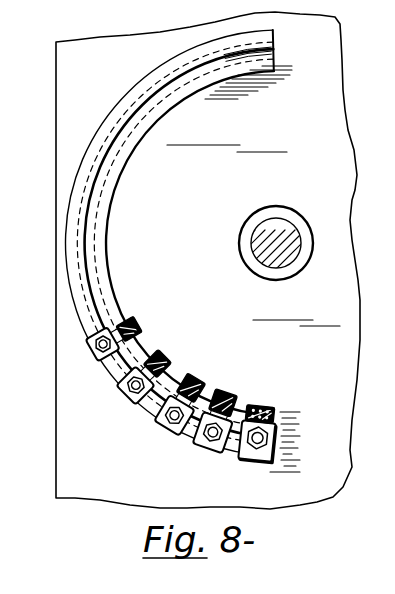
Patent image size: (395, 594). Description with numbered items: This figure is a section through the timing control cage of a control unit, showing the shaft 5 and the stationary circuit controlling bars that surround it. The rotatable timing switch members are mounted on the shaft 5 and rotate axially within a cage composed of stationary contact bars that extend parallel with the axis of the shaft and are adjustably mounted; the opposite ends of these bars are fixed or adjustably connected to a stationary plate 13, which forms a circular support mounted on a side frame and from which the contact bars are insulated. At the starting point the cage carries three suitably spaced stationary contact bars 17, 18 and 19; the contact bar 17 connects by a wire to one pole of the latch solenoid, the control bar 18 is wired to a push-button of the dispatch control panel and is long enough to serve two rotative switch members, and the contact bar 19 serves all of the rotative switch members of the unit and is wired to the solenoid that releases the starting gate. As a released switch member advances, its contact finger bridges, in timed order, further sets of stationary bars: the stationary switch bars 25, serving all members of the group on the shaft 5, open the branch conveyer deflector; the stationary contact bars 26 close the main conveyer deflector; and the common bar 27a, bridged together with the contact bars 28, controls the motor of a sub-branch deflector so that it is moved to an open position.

The stationary plate 13 is at (278, 76).
The shaft 5 is at (278, 230).
The contact bar 17 is at (267, 408).
The contact bar 18 is at (262, 407).
The contact bar 19 is at (257, 408).
The stationary switch bars 25 is at (185, 435).
The stationary contact bars 26 is at (163, 408).
The contact bar 27a is at (140, 318).
The contact bars 28 is at (140, 330).